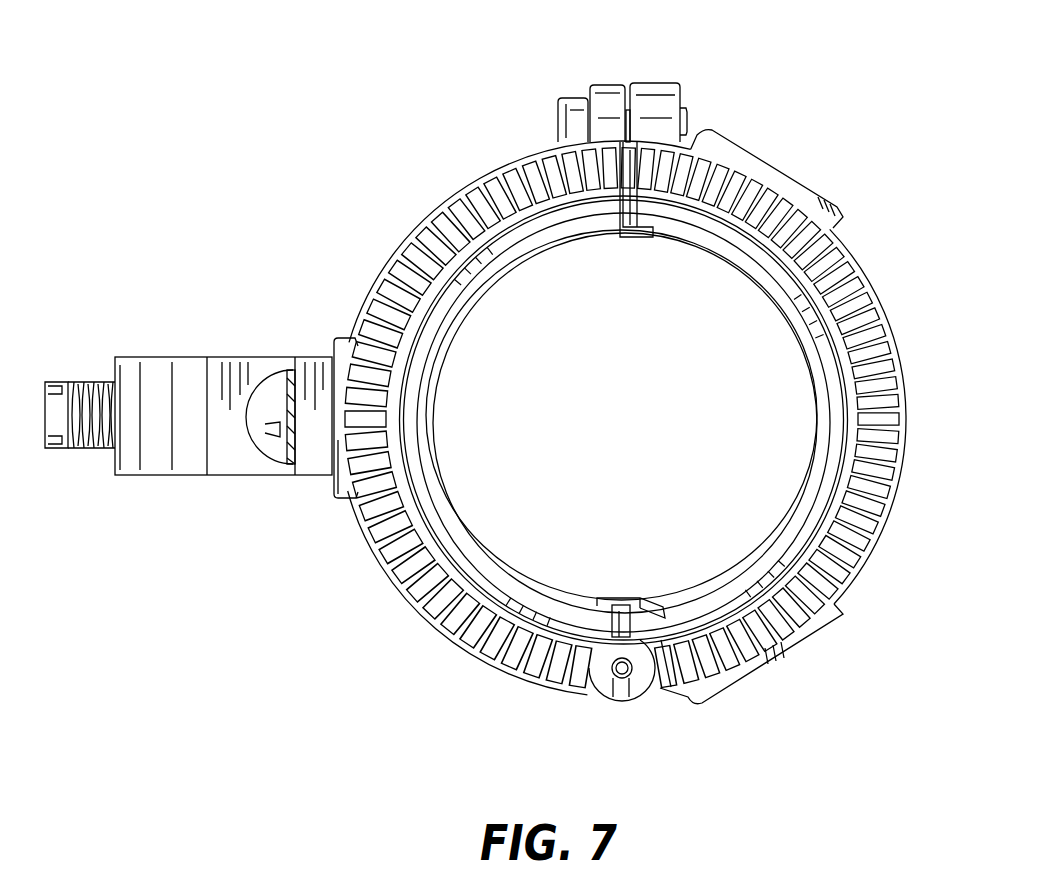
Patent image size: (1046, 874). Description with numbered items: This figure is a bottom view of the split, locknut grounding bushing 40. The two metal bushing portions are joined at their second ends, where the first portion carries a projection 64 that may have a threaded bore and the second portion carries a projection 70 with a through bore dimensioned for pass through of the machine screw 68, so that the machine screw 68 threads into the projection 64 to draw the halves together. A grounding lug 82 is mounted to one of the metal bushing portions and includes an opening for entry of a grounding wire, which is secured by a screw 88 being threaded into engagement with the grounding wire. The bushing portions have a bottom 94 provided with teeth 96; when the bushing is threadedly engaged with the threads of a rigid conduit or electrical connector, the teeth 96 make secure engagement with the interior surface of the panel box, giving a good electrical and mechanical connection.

The split, locknut grounding bushing 40 is at (318, 258).
The projection 64 is at (657, 82).
The machine screw 68 is at (565, 98).
The projection 70 is at (607, 85).
The grounding lug 82 is at (268, 350).
The screw 88 is at (90, 380).
The bottom 94 is at (427, 233).
The teeth 96 is at (888, 388).